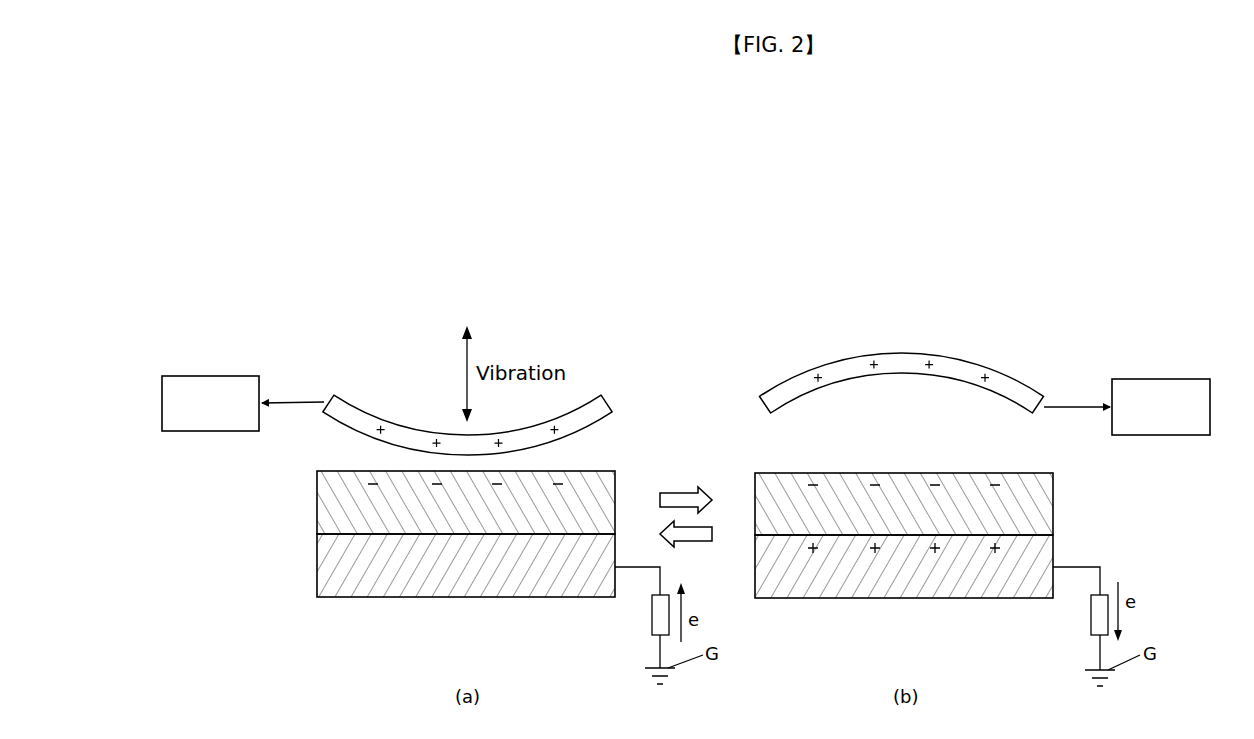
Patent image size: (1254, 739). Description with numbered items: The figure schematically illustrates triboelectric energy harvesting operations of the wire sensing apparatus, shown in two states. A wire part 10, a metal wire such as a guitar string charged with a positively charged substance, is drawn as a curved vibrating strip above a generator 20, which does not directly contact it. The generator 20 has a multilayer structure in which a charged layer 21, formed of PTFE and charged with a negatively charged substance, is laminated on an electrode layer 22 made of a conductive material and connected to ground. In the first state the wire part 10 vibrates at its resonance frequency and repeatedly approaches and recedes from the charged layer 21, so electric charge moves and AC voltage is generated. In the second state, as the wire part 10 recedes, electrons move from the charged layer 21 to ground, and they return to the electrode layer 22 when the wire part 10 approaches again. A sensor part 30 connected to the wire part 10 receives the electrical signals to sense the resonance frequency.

The wire part 10 is at (611, 403).
The generator 20 is at (249, 472).
The charged layer 21 is at (317, 500).
The electrode layer 22 is at (325, 555).
The sensor part 30 is at (210, 375).